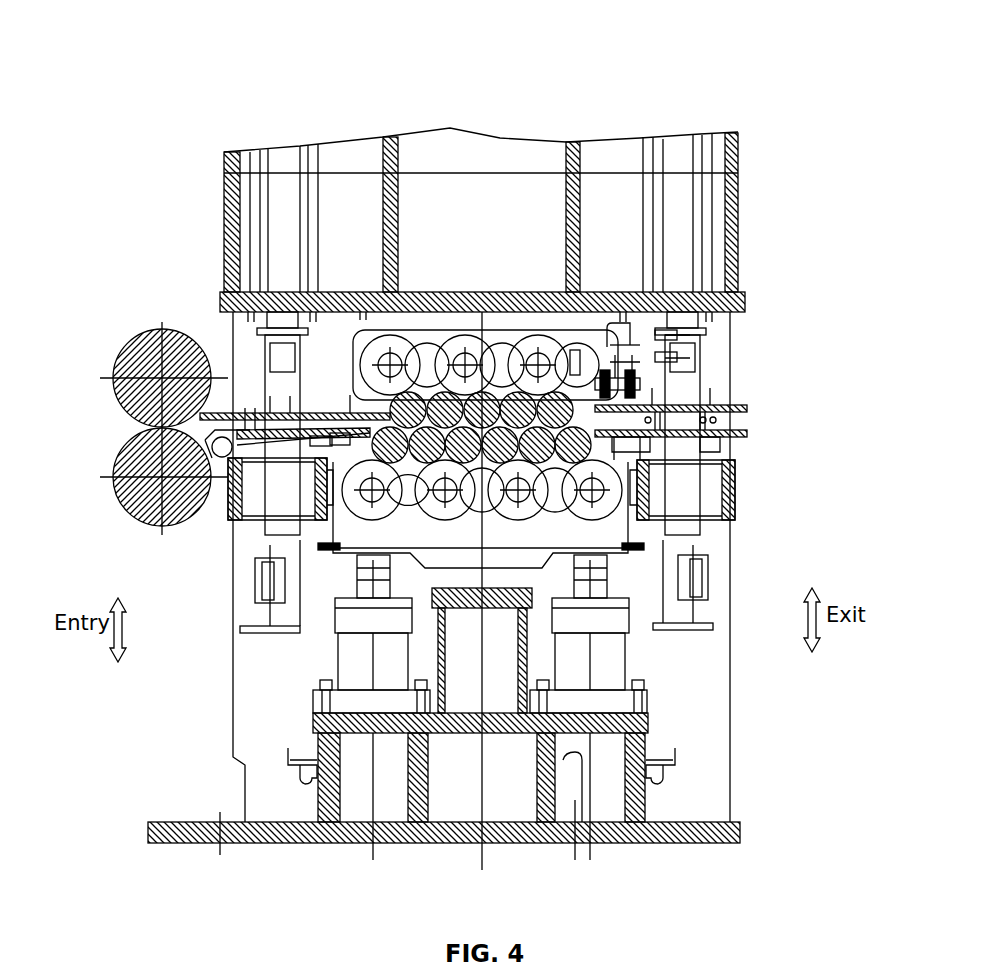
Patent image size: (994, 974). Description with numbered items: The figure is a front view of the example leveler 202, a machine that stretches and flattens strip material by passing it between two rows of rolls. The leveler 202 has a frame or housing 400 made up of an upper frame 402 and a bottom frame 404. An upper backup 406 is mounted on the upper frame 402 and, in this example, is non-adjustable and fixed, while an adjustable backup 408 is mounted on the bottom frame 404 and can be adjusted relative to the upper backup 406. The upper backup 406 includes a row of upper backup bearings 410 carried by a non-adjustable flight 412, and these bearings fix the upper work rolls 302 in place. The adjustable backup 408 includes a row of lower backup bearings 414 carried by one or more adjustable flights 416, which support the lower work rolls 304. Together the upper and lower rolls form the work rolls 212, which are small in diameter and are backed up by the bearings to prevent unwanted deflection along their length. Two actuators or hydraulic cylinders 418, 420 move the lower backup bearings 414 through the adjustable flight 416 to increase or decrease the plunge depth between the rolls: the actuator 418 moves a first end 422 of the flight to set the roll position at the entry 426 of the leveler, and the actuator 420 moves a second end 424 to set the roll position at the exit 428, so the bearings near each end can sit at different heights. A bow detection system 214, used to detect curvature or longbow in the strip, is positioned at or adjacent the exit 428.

The leveler 202 is at (717, 82).
The frame or housing 400 is at (744, 122).
The upper frame 402 is at (225, 178).
The bottom frame 404 is at (318, 808).
The upper backup 406 is at (375, 325).
The adjustable backup 408 is at (352, 543).
The upper backup bearings 410 is at (540, 335).
The non-adjustable flight 412 is at (630, 335).
The lower backup bearings 414 is at (593, 522).
The adjustable flight 416 is at (337, 600).
The actuator or hydraulic cylinder 418 is at (338, 655).
The actuator or hydraulic cylinder 420 is at (625, 645).
The first end of the adjustable flight 422 is at (335, 528).
The second end of the adjustable flight 424 is at (650, 545).
The entry 426 is at (92, 466).
The exit 428 is at (749, 385).
The work rolls 212 is at (432, 405).
The bow detection system 214 is at (636, 348).
The upper work rolls 302 is at (365, 400).
The lower work rolls 304 is at (318, 473).